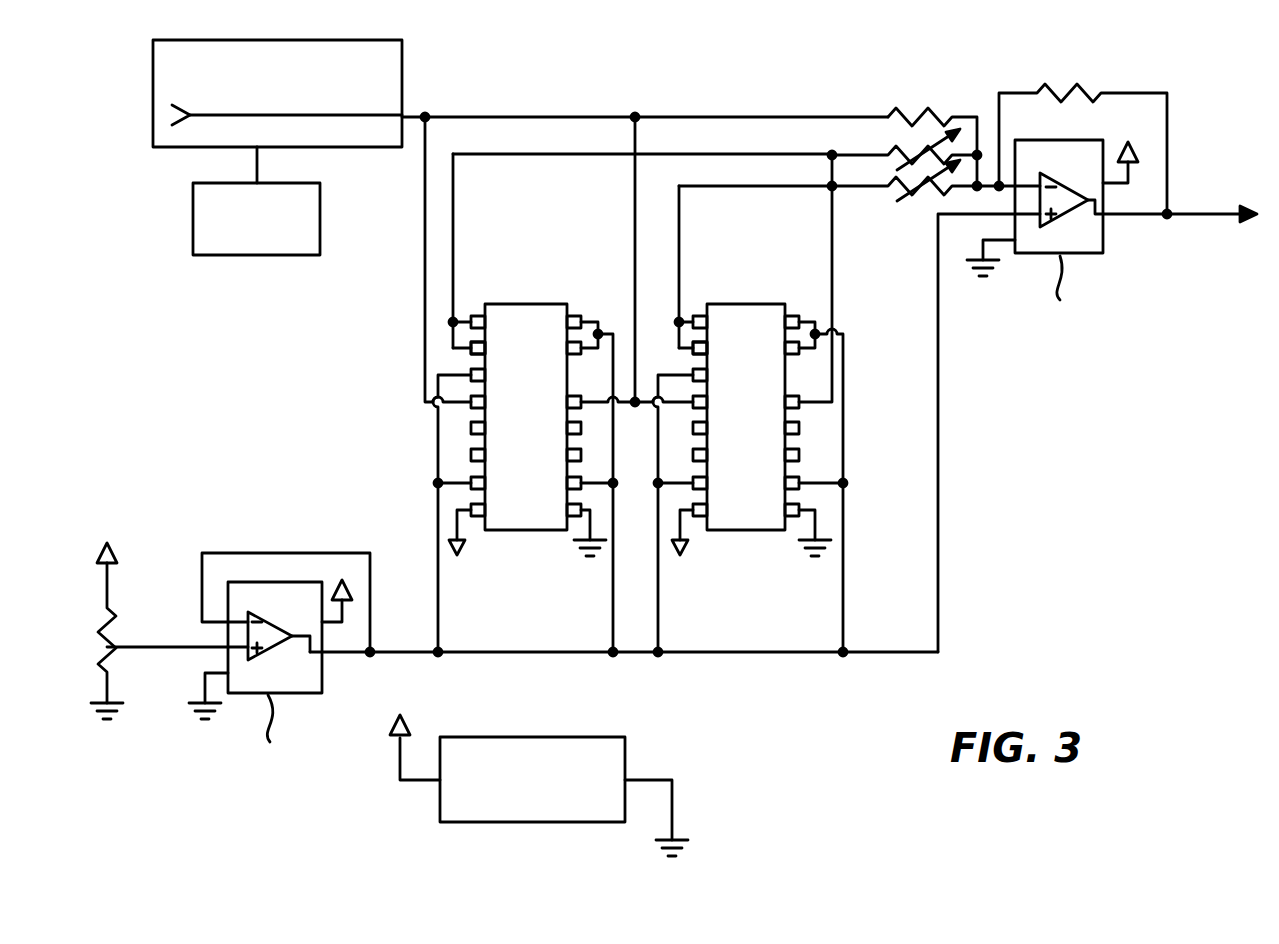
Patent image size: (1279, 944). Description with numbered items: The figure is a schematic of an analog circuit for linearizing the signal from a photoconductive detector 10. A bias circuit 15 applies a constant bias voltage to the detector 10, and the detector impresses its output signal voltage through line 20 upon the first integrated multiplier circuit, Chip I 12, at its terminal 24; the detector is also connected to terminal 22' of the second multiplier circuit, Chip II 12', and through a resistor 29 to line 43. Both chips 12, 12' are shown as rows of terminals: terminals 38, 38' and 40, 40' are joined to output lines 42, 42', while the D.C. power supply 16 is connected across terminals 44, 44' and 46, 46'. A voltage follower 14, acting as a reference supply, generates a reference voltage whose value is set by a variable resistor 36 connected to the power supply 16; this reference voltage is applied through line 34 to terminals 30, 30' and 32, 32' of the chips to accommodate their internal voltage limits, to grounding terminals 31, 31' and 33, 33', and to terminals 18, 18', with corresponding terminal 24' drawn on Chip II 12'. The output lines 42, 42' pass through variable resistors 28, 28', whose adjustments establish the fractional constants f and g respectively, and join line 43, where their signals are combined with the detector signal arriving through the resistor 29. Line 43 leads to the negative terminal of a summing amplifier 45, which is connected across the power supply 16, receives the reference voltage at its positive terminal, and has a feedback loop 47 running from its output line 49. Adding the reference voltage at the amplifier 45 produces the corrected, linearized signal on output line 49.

The photoconductive detector 10 is at (402, 87).
The bias circuit 15 is at (320, 218).
The line 20 is at (583, 117).
The output line 42 is at (640, 251).
The output line 42' is at (753, 267).
The integrated multiplier circuit (Chip I) 12 is at (524, 431).
The integrated multiplier circuit (Chip II) 12' is at (745, 434).
The terminal 38 is at (477, 292).
The terminal 38' is at (705, 290).
The grounding terminal 31 is at (590, 465).
The grounding terminal 31' is at (812, 465).
The grounding terminal 33 is at (553, 334).
The grounding terminal 33' is at (769, 338).
The terminal 40 is at (503, 356).
The terminal 40' is at (678, 357).
The terminal 18 is at (477, 510).
The terminal 18' is at (711, 508).
The terminal 24 is at (526, 412).
The terminal 24' is at (784, 286).
The terminal 22' is at (724, 423).
The terminal 30 is at (480, 475).
The terminal 30' is at (710, 483).
The terminal 32 is at (564, 497).
The terminal 32' is at (788, 502).
The terminal 44 is at (478, 539).
The terminal 44' is at (701, 540).
The terminal 46 is at (566, 545).
The terminal 46' is at (792, 542).
The resistor 29 is at (891, 116).
The variable resistor 28 is at (904, 146).
The variable resistor 28' is at (904, 204).
The line 43 is at (1005, 184).
The summing amplifier 45 is at (1103, 246).
The feedback loop 47 is at (1148, 92).
The output line 49 is at (1204, 213).
The voltage follower 14 is at (319, 665).
The variable resistor 36 is at (113, 618).
The line 34 is at (401, 651).
The D.C. power supply 16 is at (625, 738).